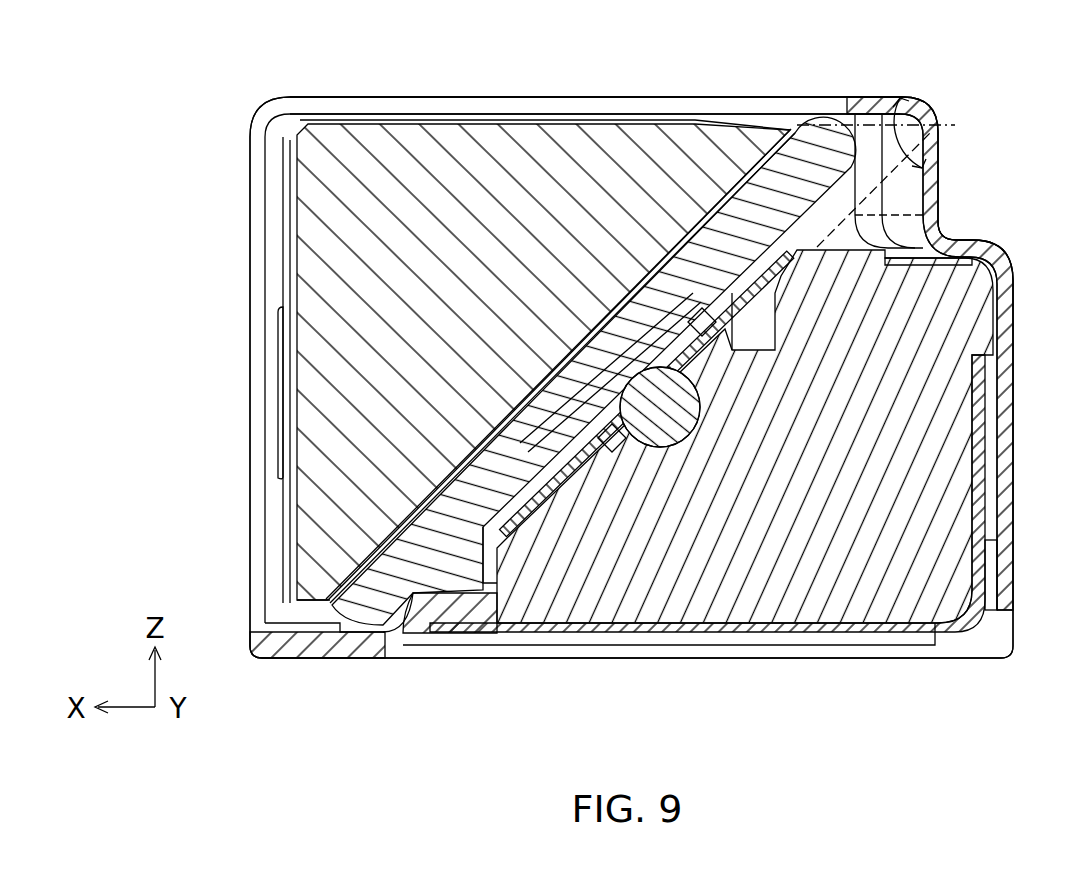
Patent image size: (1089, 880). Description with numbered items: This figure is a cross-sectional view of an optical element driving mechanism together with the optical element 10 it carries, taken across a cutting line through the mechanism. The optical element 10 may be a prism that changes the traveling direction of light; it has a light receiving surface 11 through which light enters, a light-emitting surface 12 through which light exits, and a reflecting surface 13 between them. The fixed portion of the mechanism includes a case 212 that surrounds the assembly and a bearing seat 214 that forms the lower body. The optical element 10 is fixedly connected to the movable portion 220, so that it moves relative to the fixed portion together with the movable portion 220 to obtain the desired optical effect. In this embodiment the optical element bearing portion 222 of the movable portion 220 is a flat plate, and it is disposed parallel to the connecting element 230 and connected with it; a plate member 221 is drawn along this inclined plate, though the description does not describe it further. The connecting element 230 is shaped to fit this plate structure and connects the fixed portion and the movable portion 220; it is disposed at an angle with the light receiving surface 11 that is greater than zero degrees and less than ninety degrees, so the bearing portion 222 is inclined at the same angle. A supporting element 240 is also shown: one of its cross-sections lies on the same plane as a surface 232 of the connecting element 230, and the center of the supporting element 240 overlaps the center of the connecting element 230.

The optical element 10 is at (318, 238).
The light receiving surface 11 is at (410, 120).
The case 212 is at (512, 97).
The movable portion 220 is at (288, 438).
The light-emitting surface 12 is at (297, 373).
The reflecting surface 13 is at (385, 545).
The carrier plate 221 is at (687, 243).
The optical element bearing portion 222 is at (486, 485).
The bearing seat 214 is at (970, 316).
The connecting element 230 is at (572, 490).
The surface 232 is at (617, 460).
The supporting element 240 is at (668, 420).